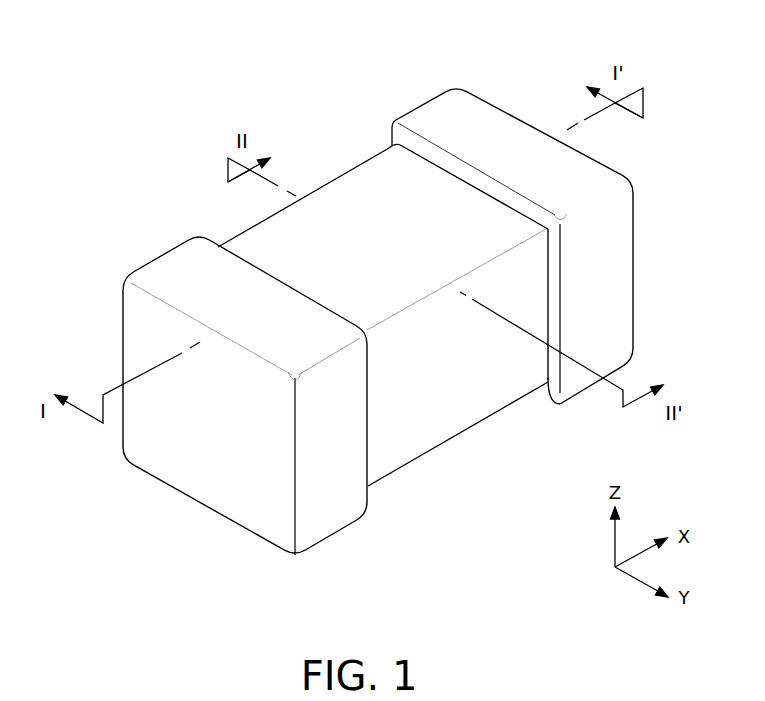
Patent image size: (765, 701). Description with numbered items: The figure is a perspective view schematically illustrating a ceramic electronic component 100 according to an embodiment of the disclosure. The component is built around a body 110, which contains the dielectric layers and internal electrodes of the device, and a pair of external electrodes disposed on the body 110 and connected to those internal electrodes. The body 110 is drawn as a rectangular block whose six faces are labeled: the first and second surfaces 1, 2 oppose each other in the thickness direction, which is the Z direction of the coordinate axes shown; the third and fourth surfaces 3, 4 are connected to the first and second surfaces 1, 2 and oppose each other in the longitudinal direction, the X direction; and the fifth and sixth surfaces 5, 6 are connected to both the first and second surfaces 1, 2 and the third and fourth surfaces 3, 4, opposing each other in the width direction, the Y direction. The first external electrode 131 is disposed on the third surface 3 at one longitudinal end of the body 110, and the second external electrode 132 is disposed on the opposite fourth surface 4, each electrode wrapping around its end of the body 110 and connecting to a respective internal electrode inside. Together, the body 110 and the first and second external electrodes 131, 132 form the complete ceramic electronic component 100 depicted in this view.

The ceramic electronic component 100 is at (411, 292).
The body 110 is at (363, 297).
The first external electrode 131 is at (245, 372).
The second external electrode 132 is at (543, 222).
The first surface 1 is at (420, 414).
The second surface 2 is at (389, 198).
The third surface 3 is at (214, 459).
The fourth surface 4 is at (588, 260).
The fifth surface 5 is at (479, 386).
The sixth surface 6 is at (335, 220).